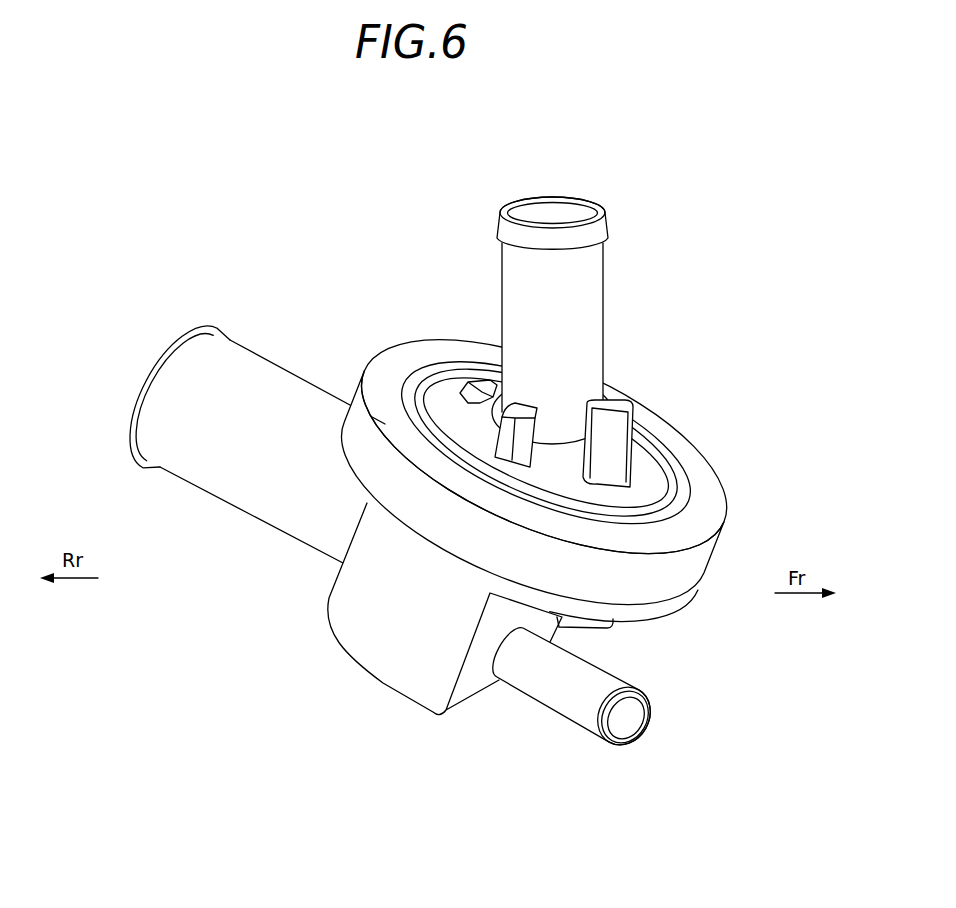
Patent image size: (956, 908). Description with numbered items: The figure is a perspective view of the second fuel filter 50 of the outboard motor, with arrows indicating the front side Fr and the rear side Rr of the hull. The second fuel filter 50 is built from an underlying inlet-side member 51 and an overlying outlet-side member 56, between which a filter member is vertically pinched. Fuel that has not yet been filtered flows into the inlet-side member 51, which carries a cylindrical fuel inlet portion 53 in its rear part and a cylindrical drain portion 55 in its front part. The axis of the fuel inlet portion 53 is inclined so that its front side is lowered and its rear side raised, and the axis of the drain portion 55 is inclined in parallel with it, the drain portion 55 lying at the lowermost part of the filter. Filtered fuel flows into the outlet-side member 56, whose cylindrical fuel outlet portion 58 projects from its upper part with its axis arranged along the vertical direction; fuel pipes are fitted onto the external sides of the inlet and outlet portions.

The second fuel filter 50 is at (473, 490).
The inlet-side member 51 is at (350, 690).
The fuel inlet portion 53 is at (218, 496).
The drain portion 55 is at (545, 708).
The outlet-side member 56 is at (692, 434).
The fuel outlet portion 58 is at (502, 280).